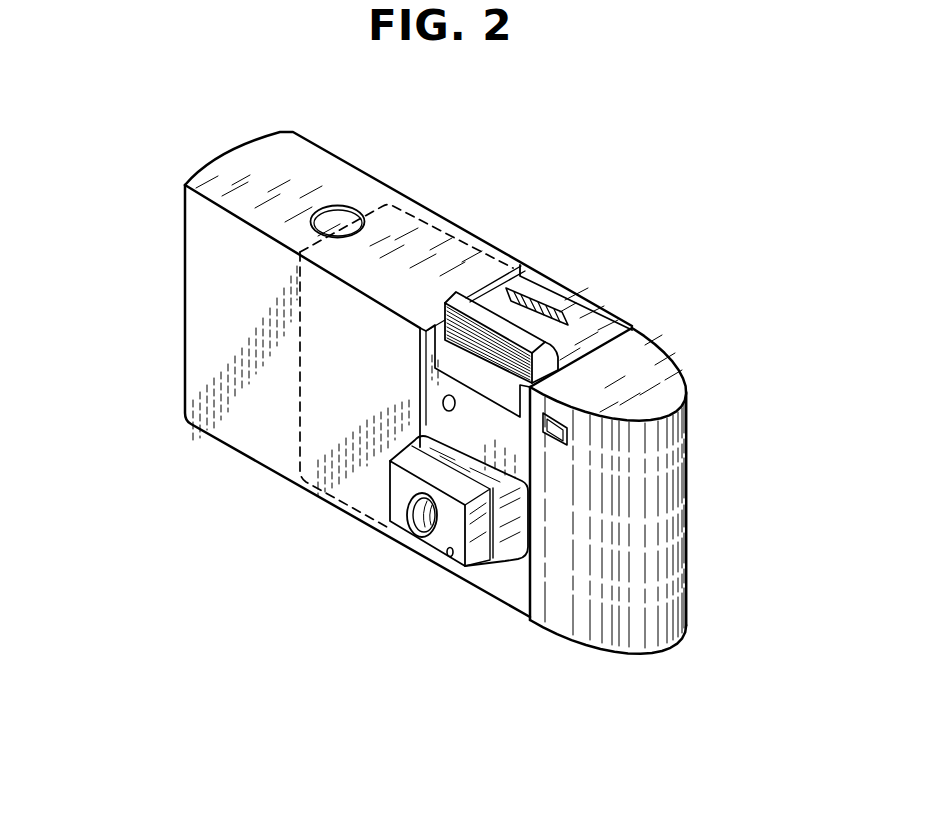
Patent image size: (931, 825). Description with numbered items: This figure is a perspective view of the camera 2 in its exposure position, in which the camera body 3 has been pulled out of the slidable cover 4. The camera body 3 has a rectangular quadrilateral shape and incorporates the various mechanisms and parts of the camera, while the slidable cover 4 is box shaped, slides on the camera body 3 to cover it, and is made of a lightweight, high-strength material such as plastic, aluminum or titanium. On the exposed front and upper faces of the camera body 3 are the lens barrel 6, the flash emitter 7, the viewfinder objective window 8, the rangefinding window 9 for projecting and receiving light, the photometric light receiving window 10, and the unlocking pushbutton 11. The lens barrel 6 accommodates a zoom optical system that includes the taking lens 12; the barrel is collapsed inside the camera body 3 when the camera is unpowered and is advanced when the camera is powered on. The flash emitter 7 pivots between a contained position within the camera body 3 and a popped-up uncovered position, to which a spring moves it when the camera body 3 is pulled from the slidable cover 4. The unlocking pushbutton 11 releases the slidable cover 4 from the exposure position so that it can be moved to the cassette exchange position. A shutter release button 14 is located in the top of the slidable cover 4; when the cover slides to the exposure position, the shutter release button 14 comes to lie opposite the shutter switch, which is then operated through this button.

The camera 2 is at (441, 395).
The camera body 3 is at (700, 524).
The slidable cover 4 is at (160, 189).
The lens barrel 6 is at (425, 553).
The flash emitter 7 is at (468, 297).
The viewfinder objective window 8 is at (553, 445).
The rangefinding window 9 is at (442, 402).
The photometric light receiving window 10 is at (450, 557).
The unlocking pushbutton 11 is at (537, 300).
The taking lens 12 is at (407, 519).
The shutter release button 14 is at (340, 213).